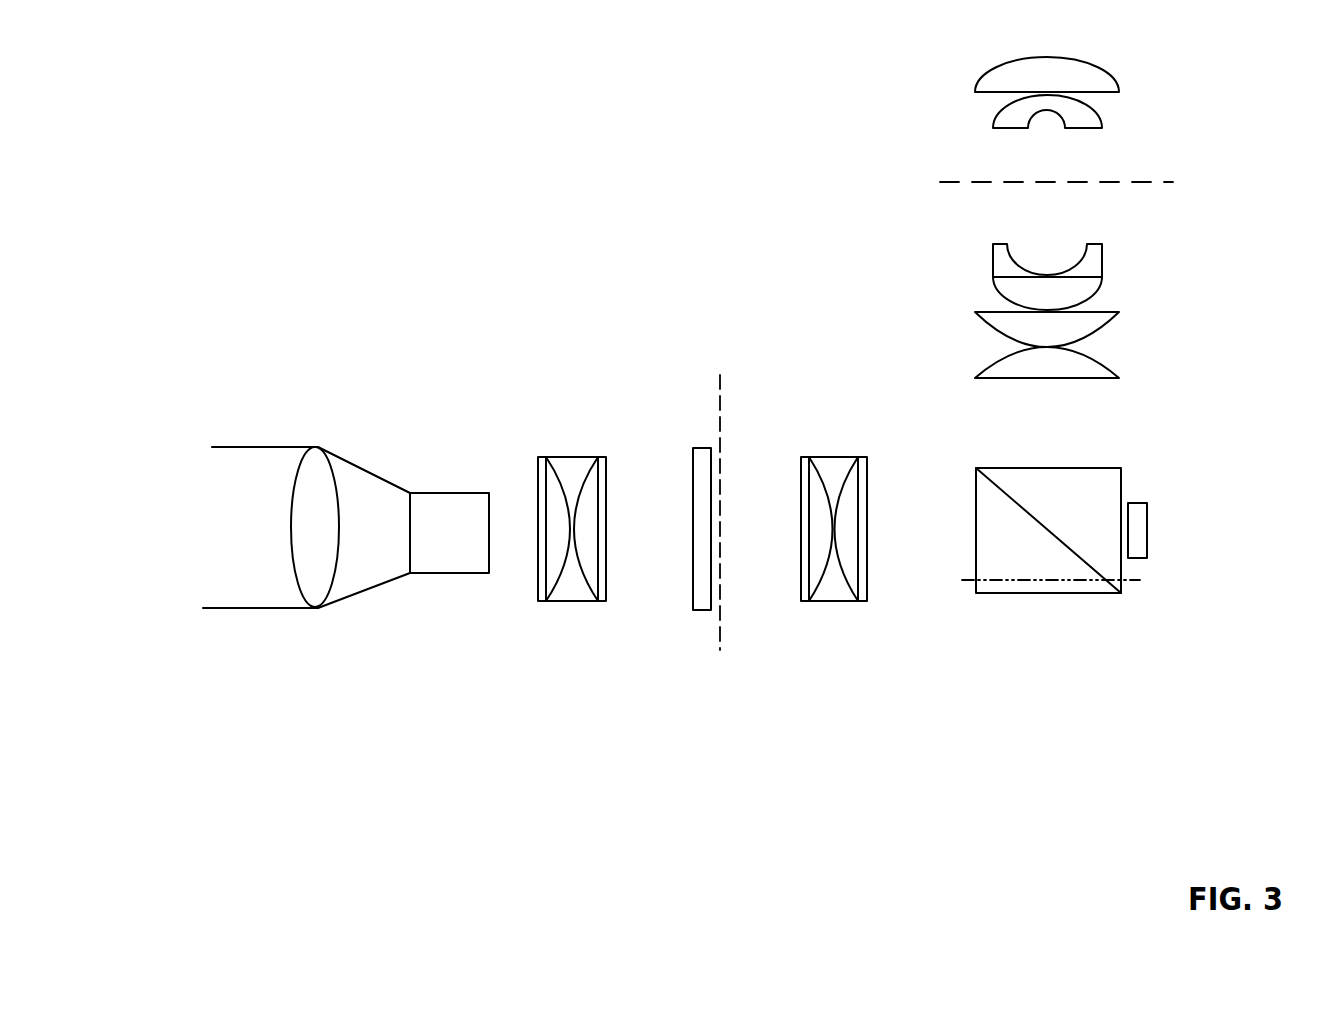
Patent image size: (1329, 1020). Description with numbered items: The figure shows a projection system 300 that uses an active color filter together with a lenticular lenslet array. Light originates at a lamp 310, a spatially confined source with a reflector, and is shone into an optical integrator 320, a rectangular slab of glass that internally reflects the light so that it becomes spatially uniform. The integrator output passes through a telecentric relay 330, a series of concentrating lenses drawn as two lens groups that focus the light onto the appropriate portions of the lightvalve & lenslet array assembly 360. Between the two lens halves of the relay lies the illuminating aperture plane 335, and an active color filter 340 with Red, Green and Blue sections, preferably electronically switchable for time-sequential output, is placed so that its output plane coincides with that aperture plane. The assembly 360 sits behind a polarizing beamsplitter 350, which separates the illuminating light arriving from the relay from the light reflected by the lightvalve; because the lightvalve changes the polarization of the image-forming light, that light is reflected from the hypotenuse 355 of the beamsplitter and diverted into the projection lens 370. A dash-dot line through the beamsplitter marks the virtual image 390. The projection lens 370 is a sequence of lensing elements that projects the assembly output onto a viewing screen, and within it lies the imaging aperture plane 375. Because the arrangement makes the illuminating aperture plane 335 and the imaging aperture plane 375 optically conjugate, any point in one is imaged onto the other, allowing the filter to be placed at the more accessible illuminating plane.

The projection system 300 is at (437, 185).
The lamp 310 is at (279, 527).
The optical integrator 320 is at (437, 499).
The telecentric relay 330 is at (875, 677).
The illuminating aperture plane 335 is at (719, 359).
The active color filter 340 is at (684, 440).
The polarizing beamsplitter 350 is at (1030, 608).
The hypotenuse 355 is at (1061, 562).
The lightvalve & lenslet array assembly 360 is at (1160, 510).
The projection lens 370 is at (920, 378).
The imaging aperture plane 375 is at (1108, 183).
The virtual image 390 is at (1127, 580).